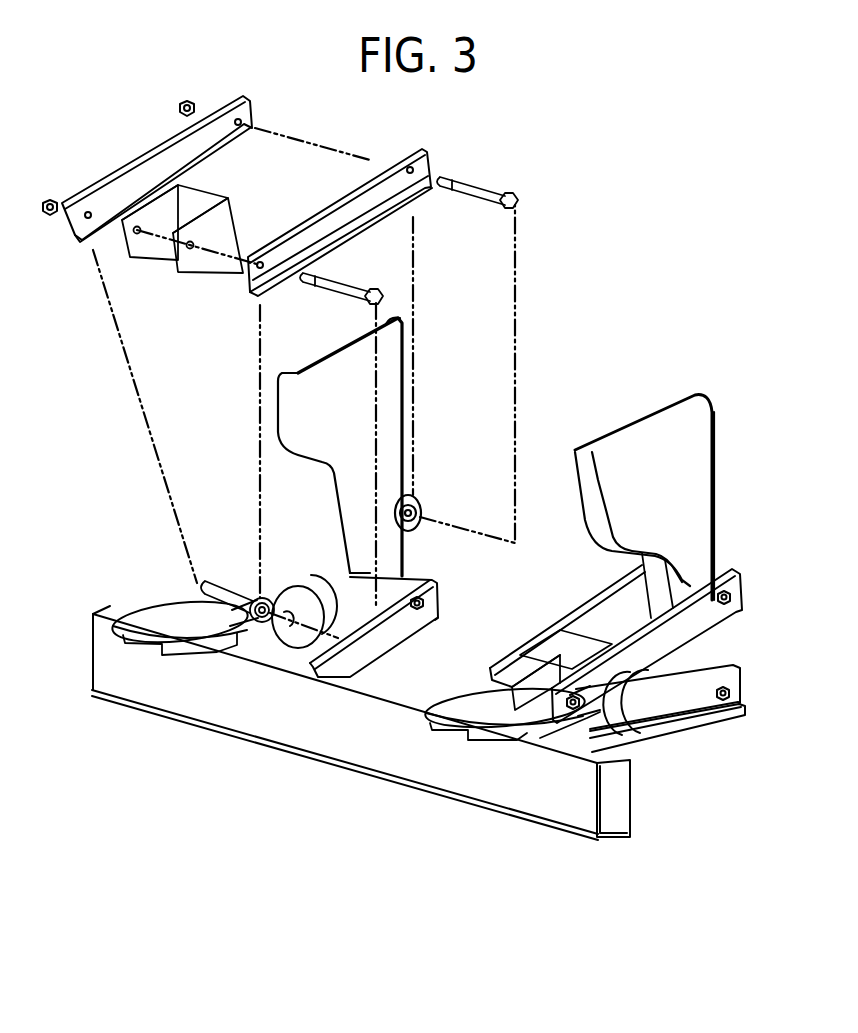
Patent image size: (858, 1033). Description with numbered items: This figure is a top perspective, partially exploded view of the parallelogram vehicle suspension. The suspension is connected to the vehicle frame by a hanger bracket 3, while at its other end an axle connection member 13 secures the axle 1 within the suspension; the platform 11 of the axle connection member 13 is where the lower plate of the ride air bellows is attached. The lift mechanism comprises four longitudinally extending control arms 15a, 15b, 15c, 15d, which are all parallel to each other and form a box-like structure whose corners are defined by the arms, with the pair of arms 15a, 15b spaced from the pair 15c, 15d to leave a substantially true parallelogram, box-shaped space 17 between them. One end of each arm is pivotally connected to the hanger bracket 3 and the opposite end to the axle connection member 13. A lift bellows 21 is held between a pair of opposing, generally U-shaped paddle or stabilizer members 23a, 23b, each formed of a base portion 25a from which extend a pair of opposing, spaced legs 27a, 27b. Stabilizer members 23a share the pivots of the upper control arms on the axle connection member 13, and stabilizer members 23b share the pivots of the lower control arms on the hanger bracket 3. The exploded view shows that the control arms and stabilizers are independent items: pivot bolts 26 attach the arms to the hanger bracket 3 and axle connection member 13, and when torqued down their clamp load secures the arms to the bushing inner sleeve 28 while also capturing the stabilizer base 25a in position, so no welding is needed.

The axle 1 is at (518, 805).
The hanger bracket 3 is at (397, 393).
The platform 11 is at (157, 623).
The axle connection member 13 is at (190, 645).
The control arm 15a is at (397, 157).
The control arm 15b is at (693, 722).
The control arm 15c is at (227, 97).
The control arm 15d is at (405, 622).
The box-shaped space 17 is at (630, 627).
The lift bellows 21 is at (303, 557).
The stabilizer member 23a is at (243, 224).
The stabilizer member 23b is at (405, 580).
The base portion 25a is at (205, 188).
The pivot bolt 26 is at (470, 193).
The leg 27a is at (143, 257).
The leg 27b is at (227, 267).
The bushing inner sleeve 28 is at (258, 595).